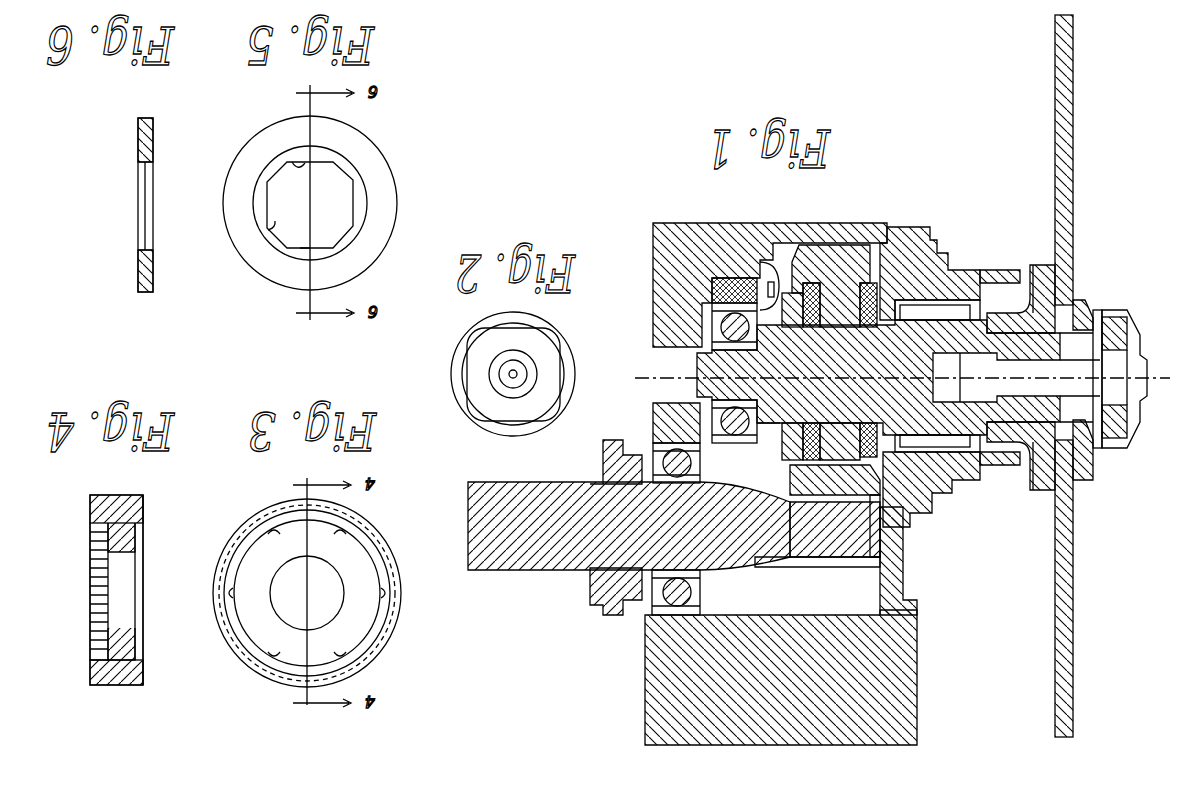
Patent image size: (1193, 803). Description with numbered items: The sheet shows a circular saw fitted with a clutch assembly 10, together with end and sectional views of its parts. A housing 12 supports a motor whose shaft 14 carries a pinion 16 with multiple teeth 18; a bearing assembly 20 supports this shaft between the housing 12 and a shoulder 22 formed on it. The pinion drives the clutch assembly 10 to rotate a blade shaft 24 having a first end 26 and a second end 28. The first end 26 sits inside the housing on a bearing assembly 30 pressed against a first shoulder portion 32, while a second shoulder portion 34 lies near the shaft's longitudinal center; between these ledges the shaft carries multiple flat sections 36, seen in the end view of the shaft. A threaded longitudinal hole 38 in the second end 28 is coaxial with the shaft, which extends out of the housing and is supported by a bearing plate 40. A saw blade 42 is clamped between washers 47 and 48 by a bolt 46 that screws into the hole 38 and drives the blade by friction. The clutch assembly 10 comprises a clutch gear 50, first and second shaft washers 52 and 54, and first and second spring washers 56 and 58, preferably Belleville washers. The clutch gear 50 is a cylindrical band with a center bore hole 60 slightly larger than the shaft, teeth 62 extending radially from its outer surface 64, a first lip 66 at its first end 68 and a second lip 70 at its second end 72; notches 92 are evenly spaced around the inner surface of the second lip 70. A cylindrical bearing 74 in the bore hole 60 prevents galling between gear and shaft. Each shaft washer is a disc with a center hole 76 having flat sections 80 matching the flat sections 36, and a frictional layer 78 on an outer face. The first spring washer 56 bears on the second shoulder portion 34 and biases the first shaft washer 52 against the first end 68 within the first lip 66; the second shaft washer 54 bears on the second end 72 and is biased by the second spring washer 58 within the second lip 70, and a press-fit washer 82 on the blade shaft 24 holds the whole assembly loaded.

In FIG. 1, the clutch assembly 10 is at (777, 478).
In FIG. 1, the housing 12 is at (648, 725).
In FIG. 1, the shaft 14 is at (508, 555).
In FIG. 1, the pinion 16 is at (780, 545).
In FIG. 1, the teeth 18 is at (833, 545).
In FIG. 1, the bearing assembly 20 is at (645, 612).
In FIG. 1, the shoulder 22 is at (600, 595).
In FIG. 1, the blade shaft 24 is at (990, 360).
In FIG. 2, the first end 26 is at (505, 380).
In FIG. 1, the first end 26 is at (655, 388).
In FIG. 1, the second end 28 is at (1103, 320).
In FIG. 1, the bearing assembly 30 is at (653, 325).
In FIG. 2, the first shoulder portion 32 is at (497, 380).
In FIG. 1, the first shoulder portion 32 is at (732, 262).
In FIG. 2, the second shoulder portion 34 is at (498, 418).
In FIG. 1, the second shoulder portion 34 is at (880, 300).
In FIG. 2, the flat sections 36 is at (505, 330).
In FIG. 1, the longitudinal hole 38 is at (990, 310).
In FIG. 1, the bearing plate 40 is at (945, 488).
In FIG. 1, the saw blade 42 is at (1062, 684).
In FIG. 1, the bolt 46 is at (1110, 455).
In FIG. 1, the washer 47 is at (1045, 490).
In FIG. 1, the washer 48 is at (1082, 470).
In FIG. 4, the clutch gear 50 is at (90, 668).
In FIG. 3, the clutch gear 50 is at (240, 632).
In FIG. 1, the clutch gear 50 is at (795, 483).
In FIG. 6, the first shaft washer 52 is at (145, 293).
In FIG. 5, the first shaft washer 52 is at (263, 270).
In FIG. 1, the first shaft washer 52 is at (915, 522).
In FIG. 1, the second shaft washer 54 is at (770, 432).
In FIG. 1, the first spring washer 56 is at (975, 478).
In FIG. 1, the second spring washer 58 is at (785, 455).
In FIG. 1, the center bore hole 60 is at (830, 330).
In FIG. 1, the teeth 62 is at (845, 505).
In FIG. 1, the outer surface 64 is at (702, 590).
In FIG. 4, the first lip 66 is at (143, 673).
In FIG. 1, the first lip 66 is at (868, 283).
In FIG. 4, the first end 68 is at (143, 655).
In FIG. 4, the second lip 70 is at (90, 508).
In FIG. 3, the second lip 70 is at (240, 548).
In FIG. 4, the second end 72 is at (90, 536).
In FIG. 3, the second end 72 is at (255, 563).
In FIG. 1, the cylindrical bearing 74 is at (845, 300).
In FIG. 6, the hole 76 is at (138, 220).
In FIG. 5, the hole 76 is at (262, 238).
In FIG. 6, the frictional layer 78 is at (153, 275).
In FIG. 5, the frictional layer 78 is at (254, 257).
In FIG. 6, the flat sections 80 is at (141, 236).
In FIG. 5, the flat sections 80 is at (347, 210).
In FIG. 1, the press-fit washer 82 is at (786, 290).
In FIG. 3, the notches 92 is at (270, 538).